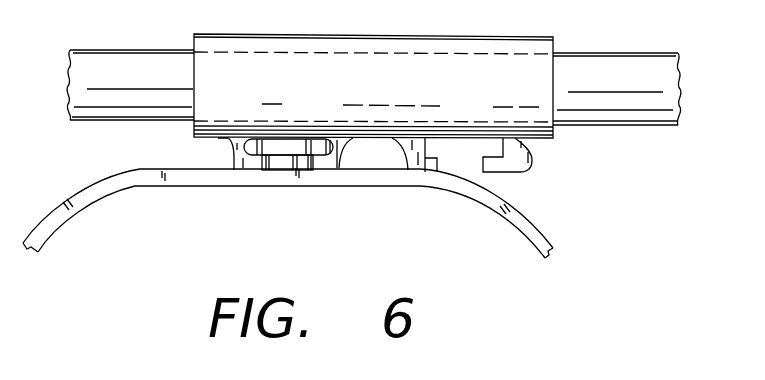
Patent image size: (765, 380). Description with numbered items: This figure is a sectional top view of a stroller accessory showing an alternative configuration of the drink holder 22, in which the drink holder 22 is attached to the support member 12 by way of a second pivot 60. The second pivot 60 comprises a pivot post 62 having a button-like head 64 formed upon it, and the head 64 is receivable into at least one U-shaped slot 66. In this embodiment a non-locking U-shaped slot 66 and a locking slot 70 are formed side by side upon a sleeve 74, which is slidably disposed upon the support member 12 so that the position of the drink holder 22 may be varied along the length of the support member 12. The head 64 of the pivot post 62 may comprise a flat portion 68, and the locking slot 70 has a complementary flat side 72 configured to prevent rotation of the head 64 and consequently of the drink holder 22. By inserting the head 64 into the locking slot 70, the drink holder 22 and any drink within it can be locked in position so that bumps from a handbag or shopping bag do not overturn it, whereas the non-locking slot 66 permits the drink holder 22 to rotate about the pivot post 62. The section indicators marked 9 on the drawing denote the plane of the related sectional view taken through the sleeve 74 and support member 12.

The support member 12 is at (126, 50).
The sleeve 74 is at (437, 37).
The second pivot 60 is at (385, 180).
The flat portion 68 is at (246, 140).
The head 64 is at (297, 143).
The pivot post 62 is at (282, 168).
The U-shaped slot 66 is at (350, 157).
The flat side 72 is at (430, 148).
The locking slot 70 is at (518, 160).
The drink holder 22 is at (508, 219).
The section line 9- 9 is at (182, 148).